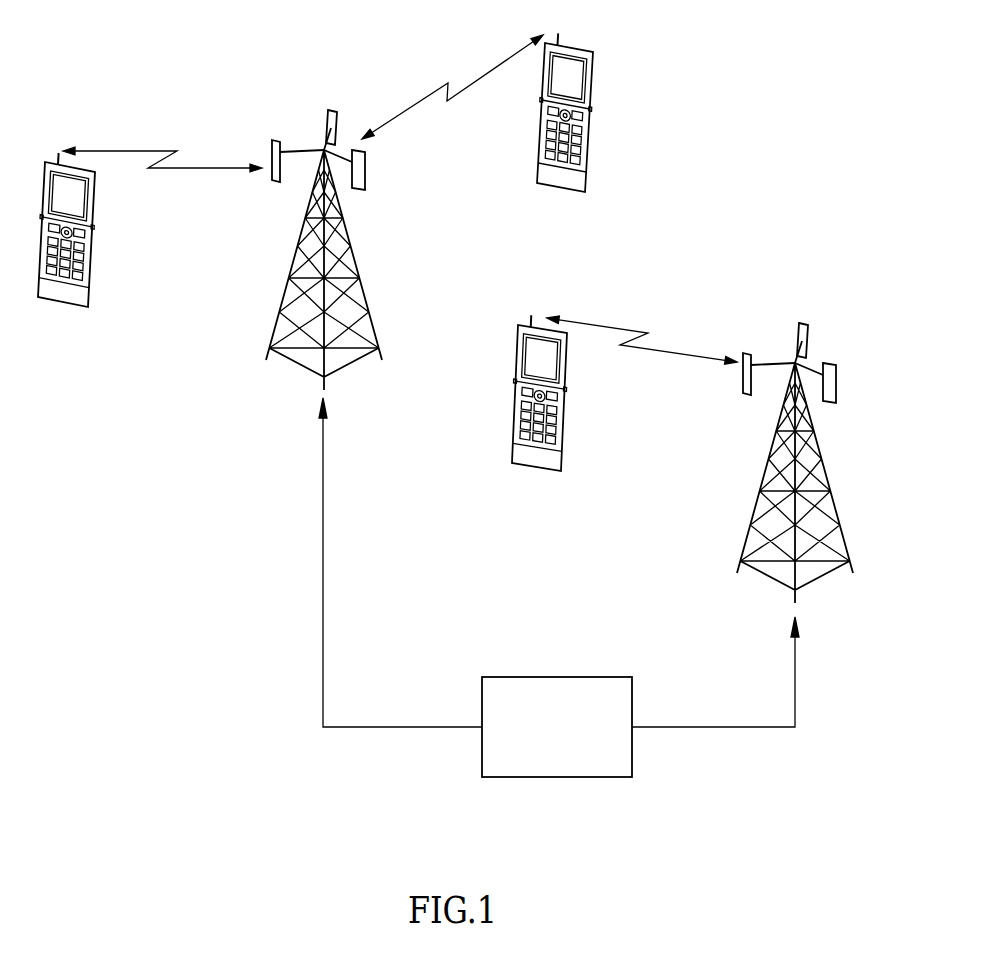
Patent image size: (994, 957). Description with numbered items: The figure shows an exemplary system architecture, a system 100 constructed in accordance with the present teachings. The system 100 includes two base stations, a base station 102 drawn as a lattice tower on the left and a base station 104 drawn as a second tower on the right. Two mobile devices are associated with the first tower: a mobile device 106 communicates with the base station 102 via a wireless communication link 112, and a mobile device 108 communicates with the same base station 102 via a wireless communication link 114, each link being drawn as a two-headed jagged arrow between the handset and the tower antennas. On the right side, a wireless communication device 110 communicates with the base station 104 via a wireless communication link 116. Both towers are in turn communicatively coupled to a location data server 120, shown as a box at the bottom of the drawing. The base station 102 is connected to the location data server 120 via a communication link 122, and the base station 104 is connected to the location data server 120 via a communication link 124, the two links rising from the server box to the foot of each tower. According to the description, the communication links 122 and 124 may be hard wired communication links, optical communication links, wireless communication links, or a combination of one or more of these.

The system 100 is at (166, 741).
The base station 102 is at (365, 293).
The base station 104 is at (835, 503).
The mobile device 106 is at (95, 270).
The mobile device 108 is at (595, 127).
The wireless communication device 110 is at (568, 415).
The wireless communication link 112 is at (142, 150).
The wireless communication link 114 is at (427, 92).
The wireless communication link 116 is at (610, 323).
The location data server 120 is at (548, 677).
The communication link 122 is at (323, 595).
The communication link 124 is at (795, 697).